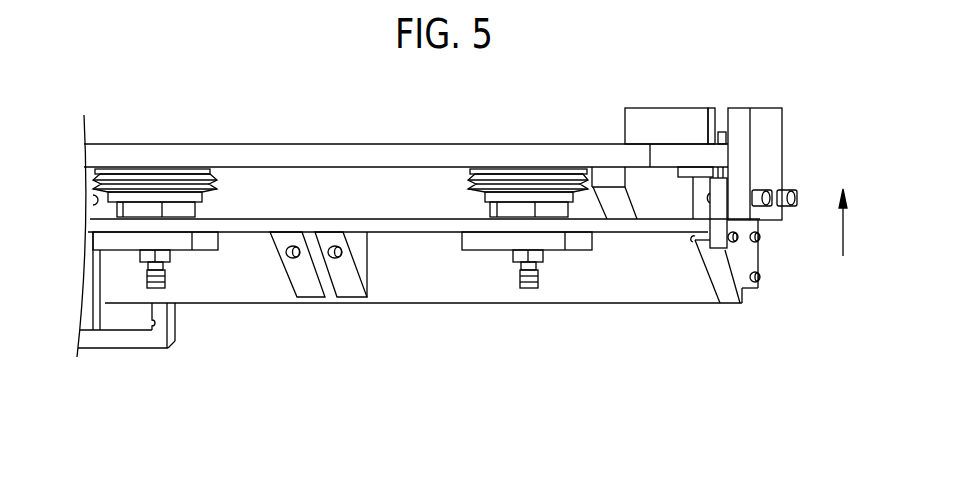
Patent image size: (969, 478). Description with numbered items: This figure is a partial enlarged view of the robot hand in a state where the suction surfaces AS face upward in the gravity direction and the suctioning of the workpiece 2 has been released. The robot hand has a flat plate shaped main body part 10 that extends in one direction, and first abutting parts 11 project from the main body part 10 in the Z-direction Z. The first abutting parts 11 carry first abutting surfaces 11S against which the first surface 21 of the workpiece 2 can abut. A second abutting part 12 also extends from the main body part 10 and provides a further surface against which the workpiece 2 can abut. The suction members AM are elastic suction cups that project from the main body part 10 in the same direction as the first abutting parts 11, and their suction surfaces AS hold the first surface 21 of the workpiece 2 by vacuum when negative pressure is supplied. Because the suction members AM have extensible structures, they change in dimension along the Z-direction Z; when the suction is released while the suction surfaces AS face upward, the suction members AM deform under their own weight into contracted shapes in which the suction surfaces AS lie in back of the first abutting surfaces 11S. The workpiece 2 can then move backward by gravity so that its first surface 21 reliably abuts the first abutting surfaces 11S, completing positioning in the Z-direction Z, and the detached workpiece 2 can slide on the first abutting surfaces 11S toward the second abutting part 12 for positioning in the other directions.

The workpiece 2 is at (372, 158).
The main body part 10 is at (397, 272).
The first abutting parts 11 is at (657, 207).
The first abutting surfaces 11S is at (601, 163).
The second abutting part 12 is at (767, 162).
The first surface 21 is at (442, 167).
The suction members AM is at (136, 181).
The suction surfaces AS is at (187, 171).
The Z-direction Z is at (853, 222).